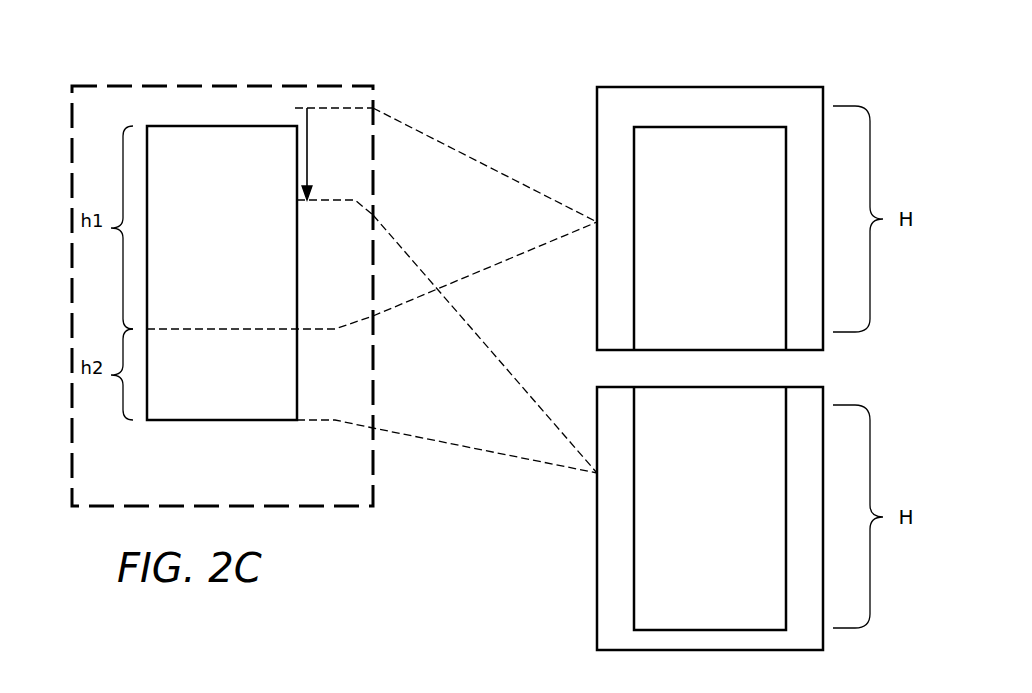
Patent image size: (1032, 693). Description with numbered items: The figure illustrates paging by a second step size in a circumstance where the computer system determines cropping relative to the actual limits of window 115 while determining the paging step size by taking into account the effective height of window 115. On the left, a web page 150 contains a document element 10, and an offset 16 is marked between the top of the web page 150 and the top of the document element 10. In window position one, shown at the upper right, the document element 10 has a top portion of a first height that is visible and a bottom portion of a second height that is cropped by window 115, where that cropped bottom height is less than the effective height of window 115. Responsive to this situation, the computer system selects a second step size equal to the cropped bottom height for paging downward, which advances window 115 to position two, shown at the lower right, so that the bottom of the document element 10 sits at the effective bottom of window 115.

The document element 10 is at (210, 284).
The vertical offset 16 is at (308, 155).
The window 115 is at (600, 87).
The web page 150 is at (373, 108).